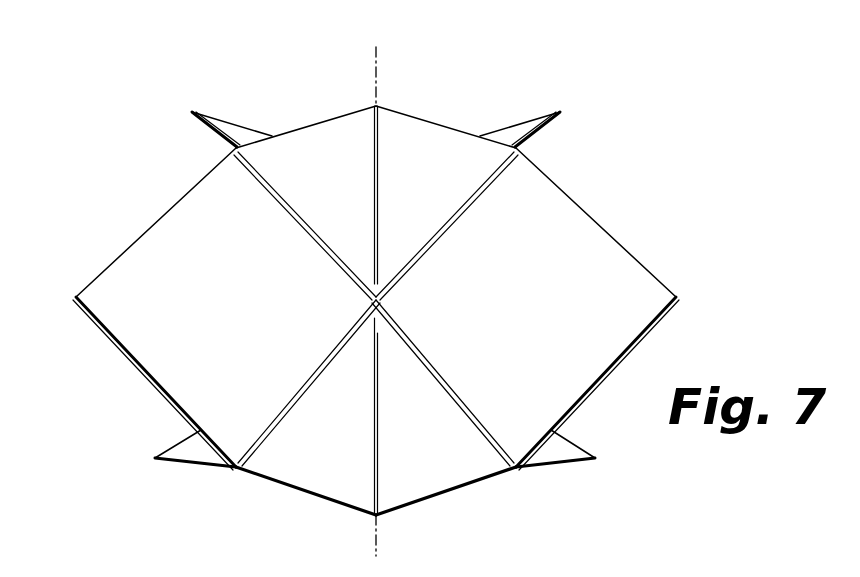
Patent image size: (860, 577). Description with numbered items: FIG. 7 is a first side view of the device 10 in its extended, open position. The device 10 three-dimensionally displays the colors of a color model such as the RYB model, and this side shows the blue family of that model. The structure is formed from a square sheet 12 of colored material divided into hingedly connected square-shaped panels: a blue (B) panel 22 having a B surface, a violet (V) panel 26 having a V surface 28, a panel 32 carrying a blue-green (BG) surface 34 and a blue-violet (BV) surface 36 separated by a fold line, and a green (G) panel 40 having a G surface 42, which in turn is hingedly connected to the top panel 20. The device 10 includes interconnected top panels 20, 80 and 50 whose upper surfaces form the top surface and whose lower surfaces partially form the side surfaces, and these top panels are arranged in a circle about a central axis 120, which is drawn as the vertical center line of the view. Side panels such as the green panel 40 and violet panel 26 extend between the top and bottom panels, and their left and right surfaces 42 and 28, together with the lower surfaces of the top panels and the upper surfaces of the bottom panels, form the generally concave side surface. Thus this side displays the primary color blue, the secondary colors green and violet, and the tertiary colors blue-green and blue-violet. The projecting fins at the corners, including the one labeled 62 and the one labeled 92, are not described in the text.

The device 10 is at (612, 61).
The square sheet 12 is at (569, 190).
The top panel 20 is at (430, 118).
The blue (B) panel 22 is at (323, 133).
The violet (V) panel 26 is at (640, 262).
The V surface 28 is at (585, 247).
The panel 32 is at (403, 507).
The blue-green (BG) surface 34 is at (315, 468).
The blue-violet (BV) surface 36 is at (458, 468).
The green (G) panel 40 is at (110, 263).
The G surface 42 is at (165, 247).
The top panel 50 is at (530, 118).
The lower right fin 62 is at (575, 463).
The top panel 80 is at (213, 113).
The lower left fin 92 is at (192, 466).
The central axis 120 is at (373, 62).